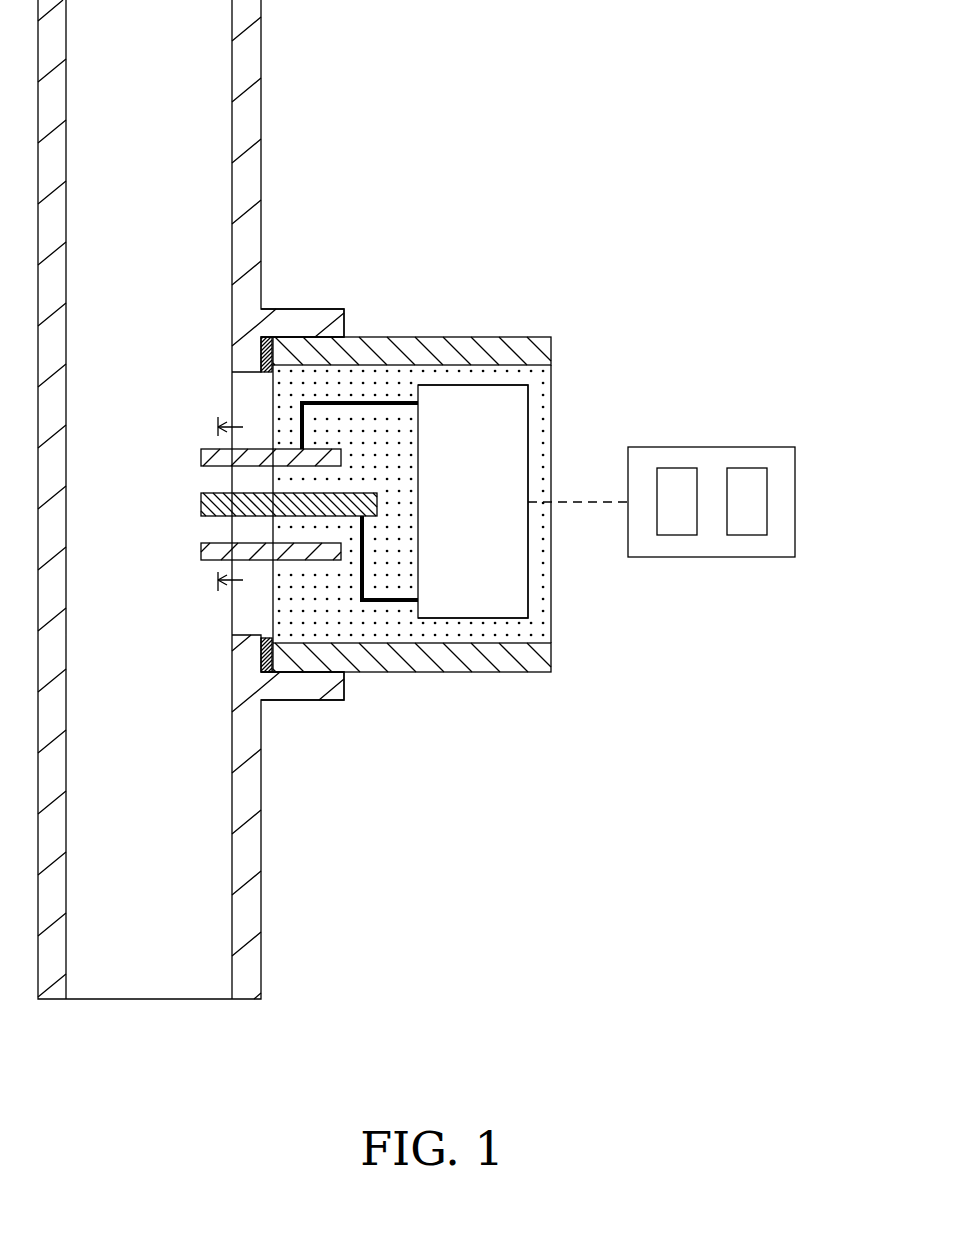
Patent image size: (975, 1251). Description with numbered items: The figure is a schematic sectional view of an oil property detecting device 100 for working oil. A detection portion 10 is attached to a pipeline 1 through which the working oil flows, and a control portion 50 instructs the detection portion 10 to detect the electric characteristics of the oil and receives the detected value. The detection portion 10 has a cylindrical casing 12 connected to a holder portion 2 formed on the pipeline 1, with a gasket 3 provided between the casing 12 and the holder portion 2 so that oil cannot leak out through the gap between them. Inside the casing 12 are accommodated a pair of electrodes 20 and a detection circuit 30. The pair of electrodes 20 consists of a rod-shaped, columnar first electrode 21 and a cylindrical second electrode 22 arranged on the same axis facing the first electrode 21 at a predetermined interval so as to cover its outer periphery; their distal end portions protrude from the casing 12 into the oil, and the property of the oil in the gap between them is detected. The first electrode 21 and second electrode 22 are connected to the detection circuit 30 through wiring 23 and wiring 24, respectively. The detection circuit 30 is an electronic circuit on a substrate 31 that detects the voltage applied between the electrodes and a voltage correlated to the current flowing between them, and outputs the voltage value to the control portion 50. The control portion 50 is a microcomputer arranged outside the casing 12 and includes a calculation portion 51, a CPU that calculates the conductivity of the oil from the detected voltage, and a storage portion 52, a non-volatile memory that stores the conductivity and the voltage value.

The pipeline 1 is at (254, 80).
The holder portion 2 is at (318, 318).
The gasket 3 is at (268, 338).
The detection portion 10 is at (452, 246).
The casing 12 is at (487, 347).
The pair of electrodes 20 is at (190, 430).
The first electrode 21 is at (201, 500).
The second electrode 22 is at (201, 552).
The wiring 23 is at (374, 606).
The wiring 24 is at (381, 395).
The detection circuit 30 is at (518, 615).
The substrate 31 is at (460, 608).
The control portion 50 is at (710, 447).
The calculation portion 51 is at (676, 528).
The storage portion 52 is at (748, 528).
The oil property detecting device 100 is at (660, 137).